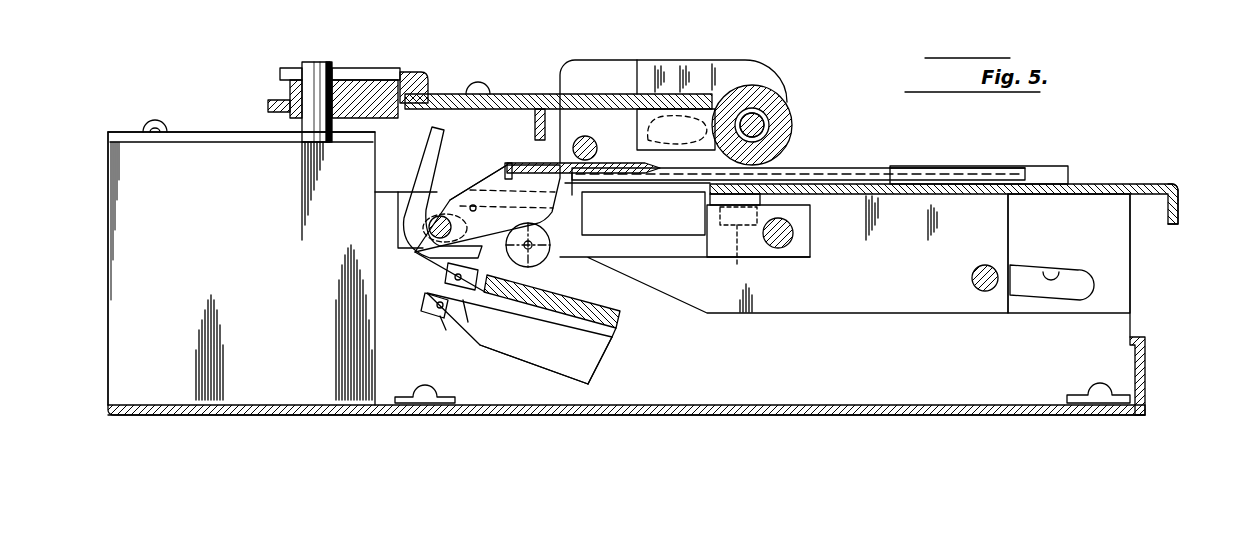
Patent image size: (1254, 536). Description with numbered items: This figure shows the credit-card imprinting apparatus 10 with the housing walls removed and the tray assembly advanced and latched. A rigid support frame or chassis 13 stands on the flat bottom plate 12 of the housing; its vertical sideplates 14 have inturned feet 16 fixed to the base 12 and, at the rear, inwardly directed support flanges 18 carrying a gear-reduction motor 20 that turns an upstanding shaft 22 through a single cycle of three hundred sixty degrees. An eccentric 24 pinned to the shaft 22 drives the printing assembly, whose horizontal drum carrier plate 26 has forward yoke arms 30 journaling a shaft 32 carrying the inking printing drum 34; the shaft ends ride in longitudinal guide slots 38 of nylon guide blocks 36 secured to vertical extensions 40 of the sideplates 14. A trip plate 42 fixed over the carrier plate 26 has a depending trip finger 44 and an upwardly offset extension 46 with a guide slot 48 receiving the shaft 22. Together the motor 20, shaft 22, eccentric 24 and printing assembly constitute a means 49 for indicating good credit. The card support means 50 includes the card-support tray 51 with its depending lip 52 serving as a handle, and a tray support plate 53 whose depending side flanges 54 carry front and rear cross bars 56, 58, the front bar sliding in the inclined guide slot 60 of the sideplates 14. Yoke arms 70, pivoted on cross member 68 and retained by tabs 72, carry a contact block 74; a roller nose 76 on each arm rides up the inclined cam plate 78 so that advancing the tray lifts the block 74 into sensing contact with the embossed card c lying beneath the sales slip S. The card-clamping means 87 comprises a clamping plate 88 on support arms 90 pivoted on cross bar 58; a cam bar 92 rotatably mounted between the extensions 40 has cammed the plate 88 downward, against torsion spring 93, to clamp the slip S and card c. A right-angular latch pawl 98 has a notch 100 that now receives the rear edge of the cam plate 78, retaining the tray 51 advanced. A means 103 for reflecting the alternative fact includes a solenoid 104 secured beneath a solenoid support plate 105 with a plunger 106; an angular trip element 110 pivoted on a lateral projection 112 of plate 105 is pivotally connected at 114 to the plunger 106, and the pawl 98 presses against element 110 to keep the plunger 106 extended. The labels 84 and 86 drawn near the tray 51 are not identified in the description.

The apparatus 10 is at (770, 420).
The flat bottom plate 12 is at (771, 404).
The support frame 13 is at (946, 411).
The vertical sideplates 14 is at (1130, 292).
The inturned feet 16 is at (398, 395).
The support flanges 18 is at (193, 130).
The gear-reduction motor 20 is at (241, 262).
The upstanding shaft 22 is at (318, 62).
The eccentric 24 is at (360, 82).
The drum carrier plate 26 is at (616, 97).
The yoke arms 30 is at (641, 128).
The shaft 32 is at (766, 125).
The printing drum 34 is at (790, 118).
The guide blocks 36 is at (755, 85).
The guide slots 38 is at (714, 97).
The vertical extensions 40 is at (574, 58).
The trip plate 42 is at (454, 93).
The trip finger 44 is at (535, 126).
The offset extension 46 is at (284, 66).
The guide slot 48 is at (410, 72).
The means for indicating a first fact 49 is at (262, 400).
The card support means 50 is at (1108, 185).
The card-support tray 51 is at (1172, 184).
The depending lip 52 is at (1180, 214).
The tray support plate 53 is at (916, 196).
The side flanges 54 is at (1012, 222).
The front cross bar 56 is at (976, 278).
The rear cross bar 58 is at (424, 256).
The guide slot 60 is at (1060, 272).
The cross member 68 is at (789, 246).
The yoke arms 70 is at (812, 219).
The tabs 72 is at (741, 258).
The contact block 74 is at (683, 236).
The nose 76 is at (548, 258).
The cam plate 78 is at (618, 316).
The plate 84 is at (1046, 166).
The plate edge 86 is at (975, 168).
The card-clamping means 87 is at (485, 193).
The clamping plate 88 is at (510, 165).
The clamp plate support arms 90 is at (540, 215).
The cam bar 92 is at (580, 143).
The torsion spring 93 is at (396, 212).
The latch element 98 is at (430, 150).
The latching notch 100 is at (519, 338).
The means for reflecting the second fact 103 is at (588, 366).
The solenoid 104 is at (546, 372).
The solenoid support plate 105 is at (602, 338).
The plunger 106 is at (443, 330).
The trip element 110 is at (466, 322).
The lateral projection 112 is at (448, 284).
The pivotal connection 114 is at (440, 316).
The sales slip S is at (900, 166).
The embossed credit card c is at (678, 183).